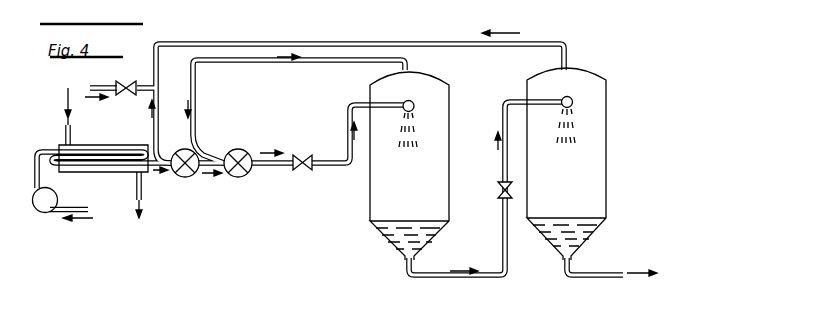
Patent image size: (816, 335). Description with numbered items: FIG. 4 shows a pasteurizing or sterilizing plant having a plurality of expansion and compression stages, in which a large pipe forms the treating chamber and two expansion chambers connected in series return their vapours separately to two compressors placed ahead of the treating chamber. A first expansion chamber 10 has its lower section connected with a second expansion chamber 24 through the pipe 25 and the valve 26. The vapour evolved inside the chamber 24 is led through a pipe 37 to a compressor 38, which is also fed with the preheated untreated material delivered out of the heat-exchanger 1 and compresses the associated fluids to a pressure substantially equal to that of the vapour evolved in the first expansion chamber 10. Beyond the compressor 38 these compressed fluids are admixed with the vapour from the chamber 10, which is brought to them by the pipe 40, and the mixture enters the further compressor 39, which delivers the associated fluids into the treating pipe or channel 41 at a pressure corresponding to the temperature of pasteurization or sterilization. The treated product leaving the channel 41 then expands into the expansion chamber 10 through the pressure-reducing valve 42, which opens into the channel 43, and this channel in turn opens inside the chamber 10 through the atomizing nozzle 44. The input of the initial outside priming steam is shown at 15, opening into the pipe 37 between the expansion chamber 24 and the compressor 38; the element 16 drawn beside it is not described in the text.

The heat-exchanger 1 is at (97, 160).
The input of the initial outside priming steam 15 is at (99, 85).
The valve 16 is at (133, 76).
The pipe 37 is at (388, 43).
The compressor 38 is at (186, 178).
The further compressor 39 is at (240, 178).
The pipe 40 is at (275, 62).
The treating pipe or channel 41 is at (273, 170).
The pressure-reducing valve 42 is at (307, 157).
The channel 43 is at (348, 122).
The atomizing nozzle 44 is at (414, 103).
The first expansion chamber 10 is at (440, 132).
The second expansion chamber 24 is at (573, 101).
The pipe 25 is at (497, 272).
The valve 26 is at (497, 191).